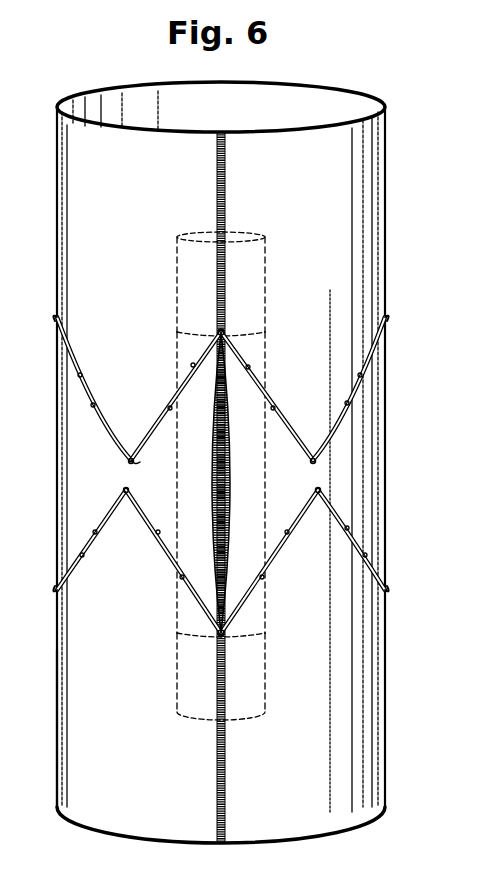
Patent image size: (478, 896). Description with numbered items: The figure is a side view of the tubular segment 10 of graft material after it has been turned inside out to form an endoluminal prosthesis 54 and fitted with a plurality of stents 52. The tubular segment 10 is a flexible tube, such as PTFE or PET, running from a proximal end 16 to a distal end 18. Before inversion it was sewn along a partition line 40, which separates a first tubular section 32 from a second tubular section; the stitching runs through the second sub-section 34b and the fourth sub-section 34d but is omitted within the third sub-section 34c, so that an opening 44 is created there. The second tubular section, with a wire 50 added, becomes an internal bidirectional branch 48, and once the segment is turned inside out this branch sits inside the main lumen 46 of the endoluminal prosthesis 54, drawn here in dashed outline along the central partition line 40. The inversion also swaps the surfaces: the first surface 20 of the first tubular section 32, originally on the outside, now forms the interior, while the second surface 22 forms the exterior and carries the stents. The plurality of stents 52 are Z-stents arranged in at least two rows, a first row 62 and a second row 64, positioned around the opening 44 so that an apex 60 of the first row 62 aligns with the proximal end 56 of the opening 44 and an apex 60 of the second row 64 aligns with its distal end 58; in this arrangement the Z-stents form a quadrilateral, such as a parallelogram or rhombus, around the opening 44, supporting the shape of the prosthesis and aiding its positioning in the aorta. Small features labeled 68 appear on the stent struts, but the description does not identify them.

The tubular segment 10 is at (365, 732).
The proximal end 16 is at (305, 838).
The distal end 18 is at (310, 90).
The first surface 20 is at (345, 106).
The second surface 22 is at (80, 224).
The first tubular section 32 is at (80, 690).
The second sub-section 34b is at (262, 705).
The third sub-section 34c is at (268, 560).
The fourth sub-section 34d is at (268, 263).
The partition line 40 is at (228, 185).
The opening 44 is at (228, 488).
The main lumen 46 is at (135, 108).
The internal bidirectional branch 48 is at (190, 478).
The wire 50 is at (228, 458).
The plurality of stents 52 is at (385, 342).
The endoluminal prosthesis 54 is at (392, 195).
The proximal end of the opening 56 is at (226, 630).
The distal end of the opening 58 is at (245, 348).
The apex 60 is at (225, 330).
The first row 62 is at (80, 560).
The second row 64 is at (85, 387).
The strut nodes 68 is at (170, 408).